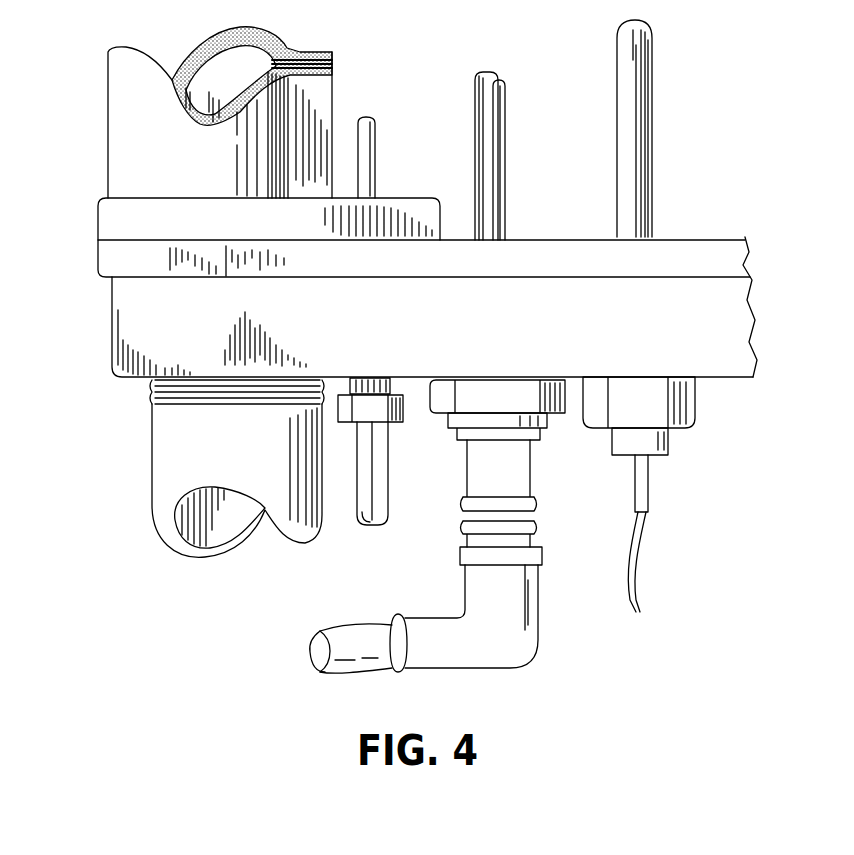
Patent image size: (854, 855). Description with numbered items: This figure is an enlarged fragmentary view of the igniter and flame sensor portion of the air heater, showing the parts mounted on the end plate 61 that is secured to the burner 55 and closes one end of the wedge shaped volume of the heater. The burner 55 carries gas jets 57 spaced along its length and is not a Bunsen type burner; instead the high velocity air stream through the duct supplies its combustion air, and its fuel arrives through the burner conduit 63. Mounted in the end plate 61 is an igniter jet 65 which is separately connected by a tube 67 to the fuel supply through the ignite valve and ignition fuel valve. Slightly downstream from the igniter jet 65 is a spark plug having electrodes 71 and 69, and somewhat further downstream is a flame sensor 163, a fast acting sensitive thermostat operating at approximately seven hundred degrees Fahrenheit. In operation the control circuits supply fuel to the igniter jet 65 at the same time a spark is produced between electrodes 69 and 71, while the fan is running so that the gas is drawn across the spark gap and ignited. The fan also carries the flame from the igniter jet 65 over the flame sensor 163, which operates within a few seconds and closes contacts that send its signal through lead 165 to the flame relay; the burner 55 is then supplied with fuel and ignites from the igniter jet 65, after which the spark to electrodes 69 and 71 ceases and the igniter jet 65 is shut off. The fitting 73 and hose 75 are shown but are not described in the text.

The burner 55 is at (108, 93).
The gas jets 57 is at (332, 68).
The end plate 61 is at (678, 237).
The burner conduit 63 is at (152, 447).
The igniter jet 65 is at (377, 138).
The tube 67 is at (390, 458).
The electrode 69 is at (505, 150).
The electrode 71 is at (475, 146).
The hose fitting 73 is at (530, 472).
The hose 75 is at (347, 620).
The flame sensor 163 is at (652, 105).
The lead 165 is at (645, 548).